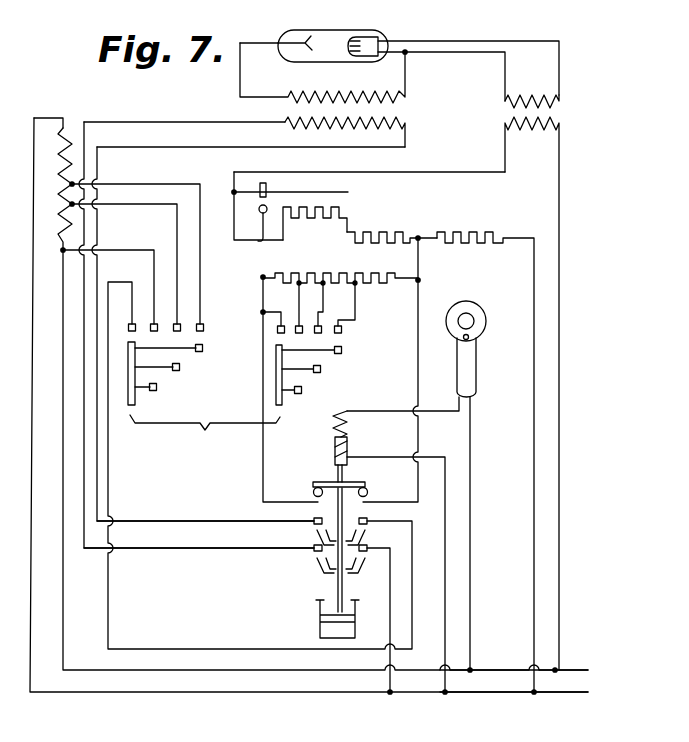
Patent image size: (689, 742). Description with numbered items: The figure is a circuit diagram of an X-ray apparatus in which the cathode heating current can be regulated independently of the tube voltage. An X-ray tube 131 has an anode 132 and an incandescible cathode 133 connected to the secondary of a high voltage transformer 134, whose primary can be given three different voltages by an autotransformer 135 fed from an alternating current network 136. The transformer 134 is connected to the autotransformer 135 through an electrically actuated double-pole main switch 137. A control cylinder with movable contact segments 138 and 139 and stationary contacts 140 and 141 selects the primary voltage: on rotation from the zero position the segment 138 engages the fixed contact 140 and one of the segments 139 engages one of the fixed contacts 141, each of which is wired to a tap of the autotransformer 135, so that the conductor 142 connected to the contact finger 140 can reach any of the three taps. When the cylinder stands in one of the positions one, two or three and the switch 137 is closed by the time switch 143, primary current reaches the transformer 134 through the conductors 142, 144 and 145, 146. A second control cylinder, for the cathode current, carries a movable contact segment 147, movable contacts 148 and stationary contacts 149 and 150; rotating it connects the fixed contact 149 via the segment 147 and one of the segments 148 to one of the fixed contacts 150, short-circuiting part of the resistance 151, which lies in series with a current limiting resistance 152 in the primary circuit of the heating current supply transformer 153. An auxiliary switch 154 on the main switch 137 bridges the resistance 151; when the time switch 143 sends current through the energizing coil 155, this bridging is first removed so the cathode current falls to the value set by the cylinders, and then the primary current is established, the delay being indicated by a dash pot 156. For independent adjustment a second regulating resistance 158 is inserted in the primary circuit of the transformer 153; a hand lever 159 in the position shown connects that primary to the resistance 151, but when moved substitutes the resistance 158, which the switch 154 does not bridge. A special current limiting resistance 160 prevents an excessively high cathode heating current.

The X-ray tube 131 is at (328, 30).
The anode 132 is at (311, 33).
The incandescible cathode 133 is at (370, 22).
The high voltage transformer 134 is at (393, 112).
The autotransformer 135 is at (72, 215).
The alternating current network 136 is at (588, 670).
The double-pole main switch 137 is at (338, 566).
The movable contact segment 138 is at (135, 400).
The movable contact segments 139 is at (203, 352).
The stationary contact 140 is at (135, 325).
The stationary contacts 141 is at (178, 325).
The conductor 142 is at (108, 447).
The time switch 143 is at (474, 321).
The conductor 144 is at (378, 548).
The conductor 145 is at (163, 521).
The conductor 146 is at (212, 548).
The movable contact segment 147 is at (302, 390).
The movable contacts 148 is at (342, 352).
The stationary contact 149 is at (284, 335).
The stationary contacts 150 is at (302, 326).
The resistance 151 is at (330, 273).
The current limiting resistance 152 is at (478, 243).
The heating current supply transformer 153 is at (515, 112).
The auxiliary switch 154 is at (346, 487).
The energizing coil 155 is at (356, 430).
The dash pot 156 is at (320, 612).
The second regulating resistance 158 is at (297, 207).
The hand lever 159 is at (279, 208).
The current limiting resistance 160 is at (366, 235).